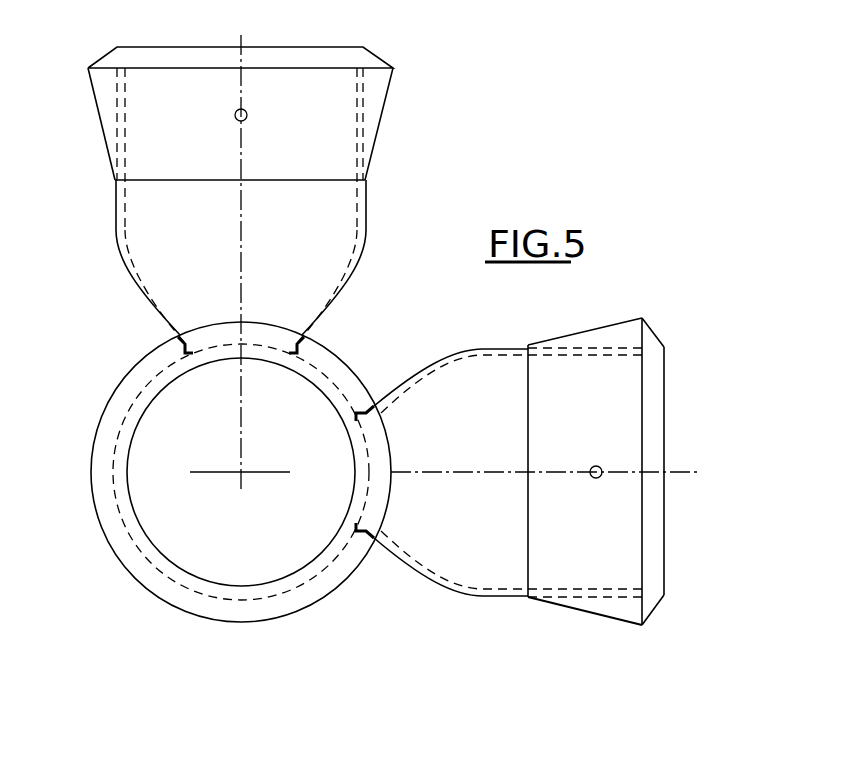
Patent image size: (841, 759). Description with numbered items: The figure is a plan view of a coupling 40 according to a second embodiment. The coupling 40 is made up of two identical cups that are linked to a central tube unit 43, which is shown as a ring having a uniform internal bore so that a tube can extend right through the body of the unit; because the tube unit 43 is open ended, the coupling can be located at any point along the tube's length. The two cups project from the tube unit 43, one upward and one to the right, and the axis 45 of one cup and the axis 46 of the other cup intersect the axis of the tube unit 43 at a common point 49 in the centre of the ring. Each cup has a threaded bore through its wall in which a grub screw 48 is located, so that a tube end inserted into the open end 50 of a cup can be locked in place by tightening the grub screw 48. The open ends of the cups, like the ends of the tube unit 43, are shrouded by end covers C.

The coupling 40 is at (103, 393).
The tube unit 43 is at (113, 483).
The axis 45 is at (412, 476).
The axis 46 is at (241, 252).
The grub screw 48 is at (247, 112).
The point 49 is at (238, 480).
The open end 50 is at (664, 437).
The end cover C is at (581, 578).